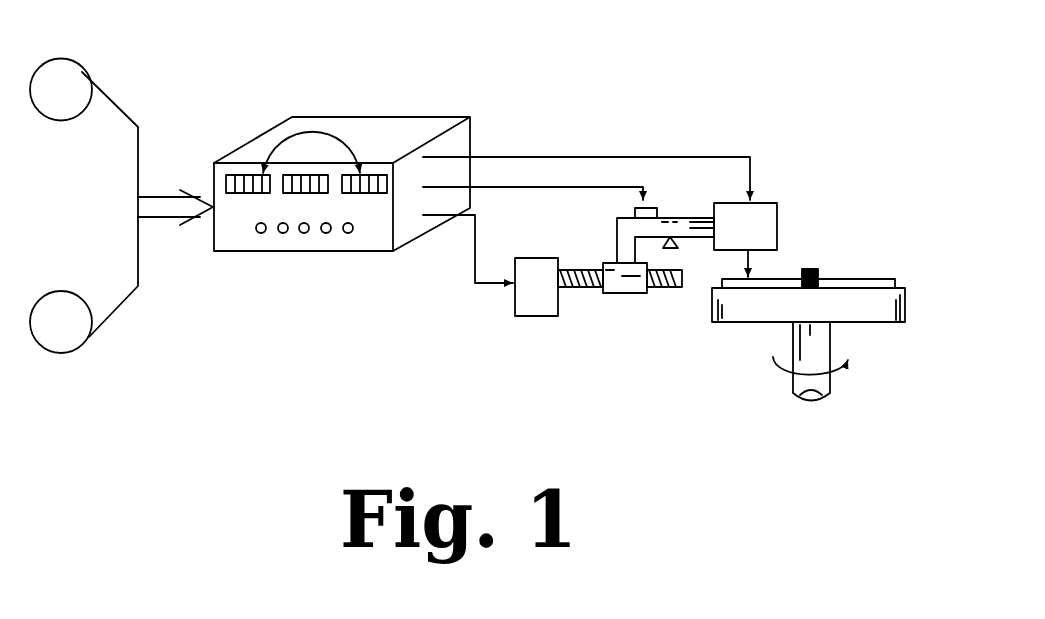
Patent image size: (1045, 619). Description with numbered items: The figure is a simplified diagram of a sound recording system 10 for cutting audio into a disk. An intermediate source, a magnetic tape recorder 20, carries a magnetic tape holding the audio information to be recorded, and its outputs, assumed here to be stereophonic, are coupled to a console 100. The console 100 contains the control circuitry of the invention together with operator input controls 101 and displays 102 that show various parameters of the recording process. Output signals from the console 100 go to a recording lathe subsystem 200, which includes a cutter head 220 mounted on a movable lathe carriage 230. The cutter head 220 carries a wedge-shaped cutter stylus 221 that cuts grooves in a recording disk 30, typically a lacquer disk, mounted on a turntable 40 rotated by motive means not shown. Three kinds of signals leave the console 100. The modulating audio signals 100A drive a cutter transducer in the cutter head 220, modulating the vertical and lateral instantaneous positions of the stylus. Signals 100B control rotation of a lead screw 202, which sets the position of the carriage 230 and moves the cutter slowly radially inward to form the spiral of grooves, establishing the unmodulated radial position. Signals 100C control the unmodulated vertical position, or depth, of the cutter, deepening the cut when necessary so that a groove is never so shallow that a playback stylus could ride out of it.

The sound recording system 10 is at (348, 442).
The magnetic tape recorder 20 is at (160, 139).
The console 100 is at (321, 213).
The operator input controls 101 is at (300, 238).
The displays 102 is at (306, 173).
The output signals 100A is at (620, 157).
The signals 100B is at (632, 390).
The signals 100C is at (525, 186).
The recording lathe subsystem 200 is at (700, 233).
The lead screw 202 is at (582, 270).
The cutter head 220 is at (778, 231).
The cutter stylus 221 is at (753, 266).
The lathe carriage 230 is at (682, 215).
The recording disk 30 is at (845, 278).
The turntable 40 is at (870, 315).